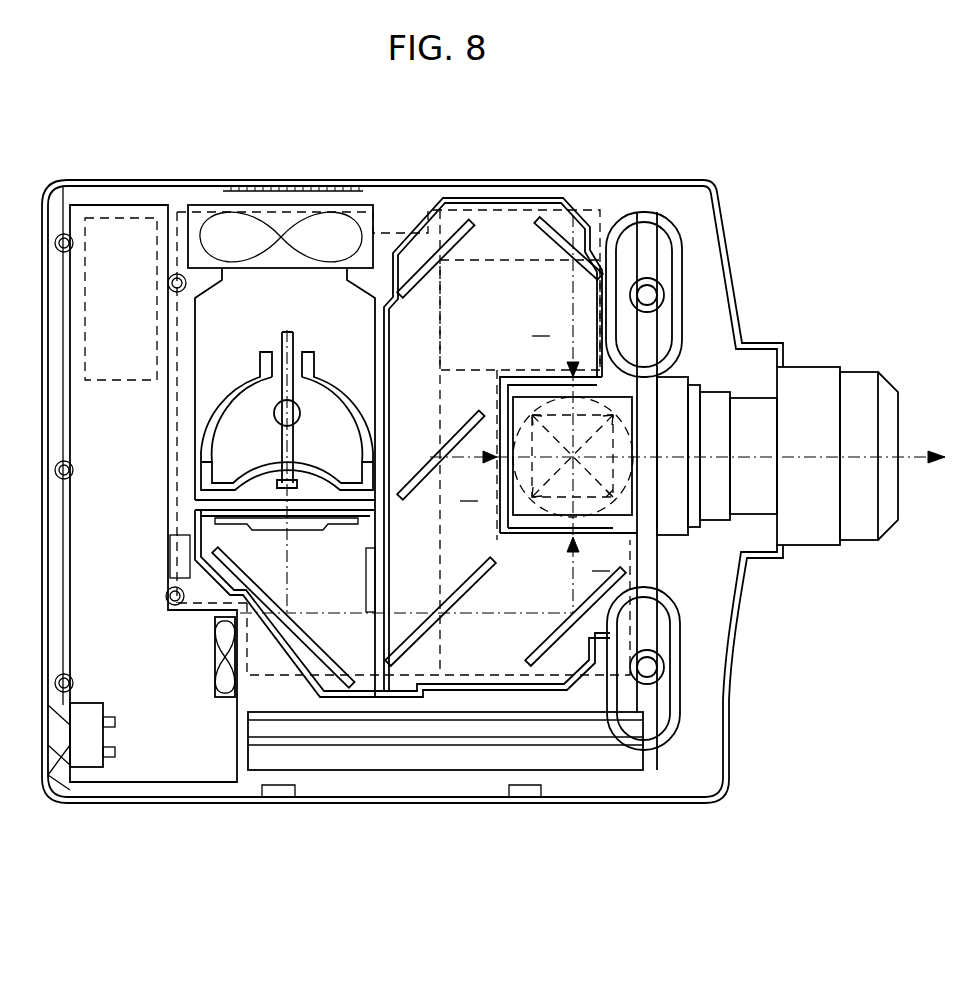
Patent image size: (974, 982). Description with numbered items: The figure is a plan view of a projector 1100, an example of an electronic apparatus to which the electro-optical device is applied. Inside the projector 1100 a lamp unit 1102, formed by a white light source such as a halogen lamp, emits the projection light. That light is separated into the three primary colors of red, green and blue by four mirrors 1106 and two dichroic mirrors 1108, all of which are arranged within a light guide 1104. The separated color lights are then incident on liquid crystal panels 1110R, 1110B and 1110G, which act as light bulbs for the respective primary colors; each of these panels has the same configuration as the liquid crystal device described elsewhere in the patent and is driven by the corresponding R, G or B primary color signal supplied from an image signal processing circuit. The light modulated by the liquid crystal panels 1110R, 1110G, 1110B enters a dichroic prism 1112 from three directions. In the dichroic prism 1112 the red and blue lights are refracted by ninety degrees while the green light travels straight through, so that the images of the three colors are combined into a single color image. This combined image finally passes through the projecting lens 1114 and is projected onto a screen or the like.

The projector 1100 is at (752, 183).
The lamp unit 1102 is at (332, 318).
The light guide 1104 is at (430, 217).
The mirrors 1106 is at (453, 248).
The dichroic mirrors 1108 is at (467, 585).
The liquid crystal panel 1110R is at (547, 372).
The liquid crystal panel 1110G is at (510, 428).
The liquid crystal panel 1110B is at (535, 528).
The dichroic prism 1112 is at (627, 515).
The projecting lens 1114 is at (870, 380).